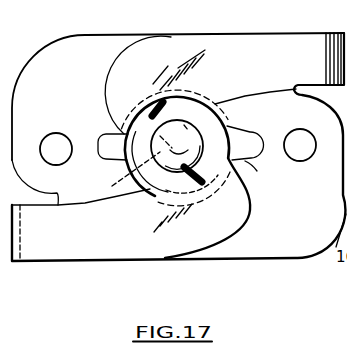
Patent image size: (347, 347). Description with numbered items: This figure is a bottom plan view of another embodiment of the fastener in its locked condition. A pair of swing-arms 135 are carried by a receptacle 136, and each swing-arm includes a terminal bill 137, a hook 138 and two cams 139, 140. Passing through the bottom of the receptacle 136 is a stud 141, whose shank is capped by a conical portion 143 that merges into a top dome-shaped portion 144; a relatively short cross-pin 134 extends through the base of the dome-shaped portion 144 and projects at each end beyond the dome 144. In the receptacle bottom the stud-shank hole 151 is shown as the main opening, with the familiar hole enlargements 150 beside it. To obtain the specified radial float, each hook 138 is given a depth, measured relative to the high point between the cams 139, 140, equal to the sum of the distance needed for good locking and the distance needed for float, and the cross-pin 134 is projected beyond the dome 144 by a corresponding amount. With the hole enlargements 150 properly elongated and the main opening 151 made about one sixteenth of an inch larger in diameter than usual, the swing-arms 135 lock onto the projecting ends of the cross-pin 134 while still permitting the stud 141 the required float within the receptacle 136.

The cross-pin 134 is at (170, 103).
The swing-arms 135 is at (237, 55).
The receptacle 136 is at (93, 36).
The terminal bill 137 is at (148, 124).
The hook 138 is at (147, 115).
The cam 139 is at (180, 103).
The cam 140 is at (176, 103).
The stud 141 is at (225, 127).
The conical portion 143 is at (265, 171).
The dome-shaped portion 144 is at (170, 186).
The hole enlargements 150 is at (100, 141).
The stud-shank hole 151 is at (228, 113).